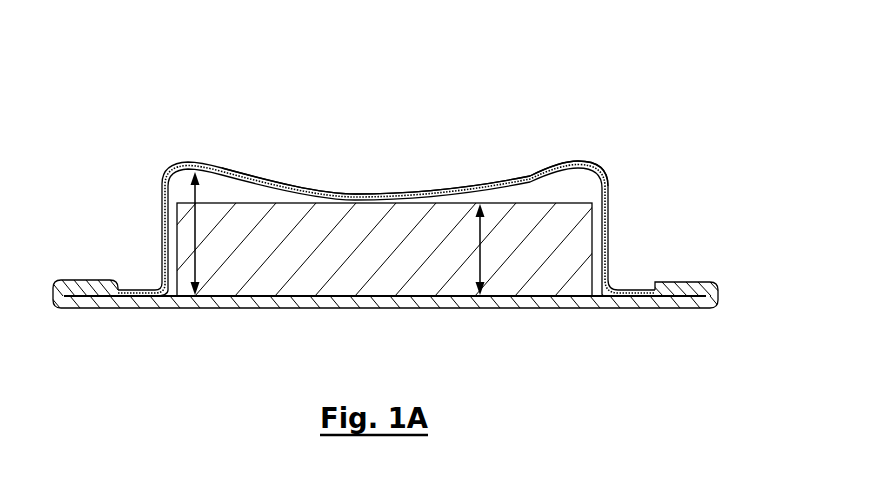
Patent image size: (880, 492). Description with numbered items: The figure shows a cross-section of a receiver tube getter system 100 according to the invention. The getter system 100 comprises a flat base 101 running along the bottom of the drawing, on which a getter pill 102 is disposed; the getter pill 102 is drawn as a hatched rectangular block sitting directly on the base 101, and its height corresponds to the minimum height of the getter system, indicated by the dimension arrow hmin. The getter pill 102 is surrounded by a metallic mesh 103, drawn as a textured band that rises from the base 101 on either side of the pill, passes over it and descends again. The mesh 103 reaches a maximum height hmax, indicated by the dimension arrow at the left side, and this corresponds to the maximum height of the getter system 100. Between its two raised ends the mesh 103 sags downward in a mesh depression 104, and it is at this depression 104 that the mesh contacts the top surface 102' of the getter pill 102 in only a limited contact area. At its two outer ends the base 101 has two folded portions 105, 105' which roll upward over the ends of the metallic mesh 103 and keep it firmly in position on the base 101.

The getter system 100 is at (400, 193).
The base 101 is at (622, 308).
The getter pill 102 is at (401, 232).
The top surface 102' is at (560, 148).
The metallic mesh 103 is at (158, 262).
The mesh depression 104 is at (387, 198).
The folded portion 105 is at (75, 265).
The folded portion 105' is at (700, 266).
The maximum height hmax is at (195, 223).
The minimum height hmin is at (480, 258).